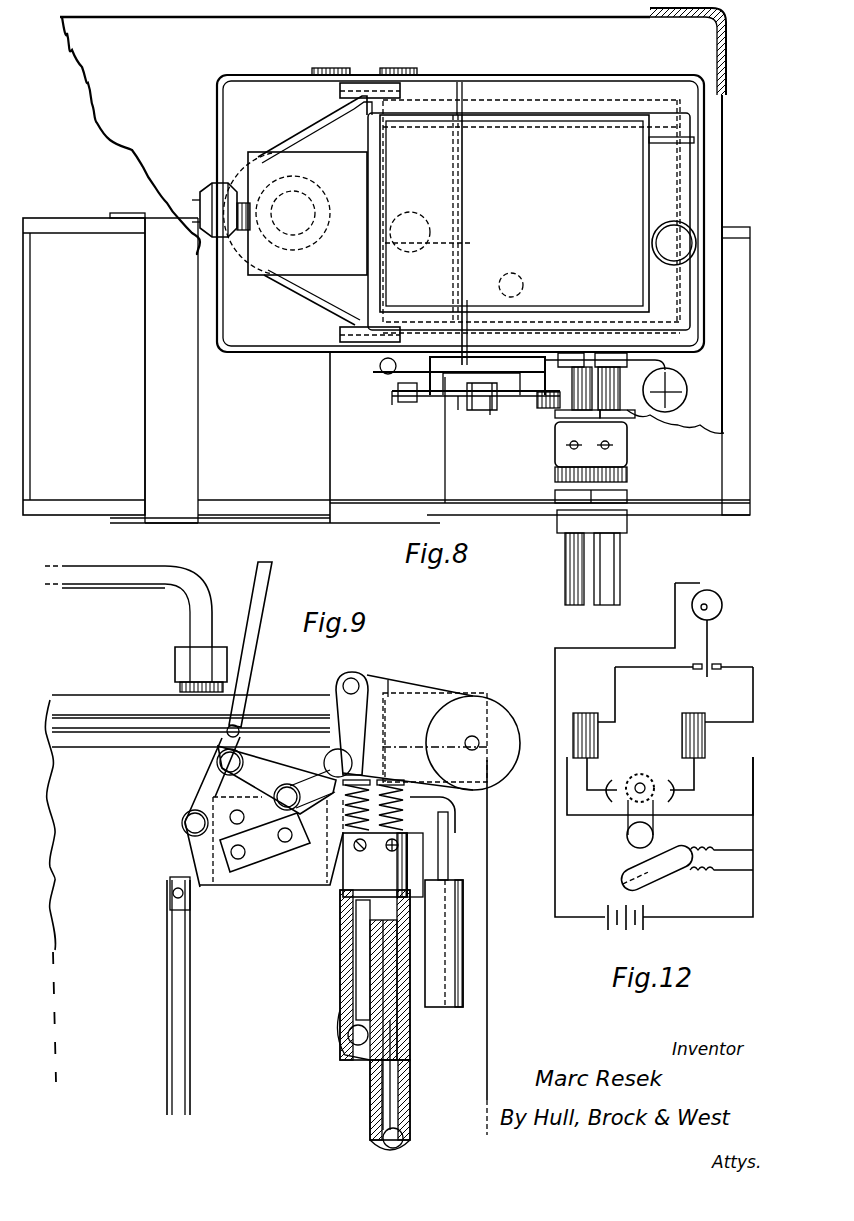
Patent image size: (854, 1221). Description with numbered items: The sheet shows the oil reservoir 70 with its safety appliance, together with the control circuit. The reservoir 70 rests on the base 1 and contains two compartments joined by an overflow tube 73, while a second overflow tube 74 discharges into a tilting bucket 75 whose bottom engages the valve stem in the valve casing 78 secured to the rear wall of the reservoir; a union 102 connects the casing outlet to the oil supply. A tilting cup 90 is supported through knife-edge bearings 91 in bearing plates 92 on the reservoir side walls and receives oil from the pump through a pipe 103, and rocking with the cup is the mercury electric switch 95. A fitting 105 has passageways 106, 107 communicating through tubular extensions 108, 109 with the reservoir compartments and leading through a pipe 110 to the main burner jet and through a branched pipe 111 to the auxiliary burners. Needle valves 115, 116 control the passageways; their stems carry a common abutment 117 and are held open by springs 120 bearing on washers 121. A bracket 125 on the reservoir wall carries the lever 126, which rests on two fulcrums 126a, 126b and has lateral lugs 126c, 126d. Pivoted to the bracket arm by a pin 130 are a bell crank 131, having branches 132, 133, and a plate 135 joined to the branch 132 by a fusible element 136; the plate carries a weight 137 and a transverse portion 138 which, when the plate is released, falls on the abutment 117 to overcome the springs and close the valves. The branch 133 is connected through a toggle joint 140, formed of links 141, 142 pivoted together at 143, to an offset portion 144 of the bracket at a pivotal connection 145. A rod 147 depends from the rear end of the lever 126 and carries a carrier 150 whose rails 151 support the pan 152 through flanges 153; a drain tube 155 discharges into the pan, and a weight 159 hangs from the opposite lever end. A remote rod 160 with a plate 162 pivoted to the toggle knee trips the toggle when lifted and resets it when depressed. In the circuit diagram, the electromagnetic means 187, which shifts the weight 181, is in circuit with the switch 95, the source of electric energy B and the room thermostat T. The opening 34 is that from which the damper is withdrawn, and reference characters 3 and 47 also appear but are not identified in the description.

In FIG. 8, the base 1 is at (112, 118).
In FIG. 8, the frame member 3 is at (688, 18).
In FIG. 8, the opening 34 is at (295, 213).
In FIG. 9, the rod 47 is at (190, 1003).
In FIG. 8, the oil reservoir 70 is at (467, 75).
In FIG. 9, the oil reservoir 70 is at (266, 915).
In FIG. 8, the overflow tube 73 is at (652, 232).
In FIG. 8, the overflow tube 74 is at (471, 243).
In FIG. 8, the tilting bucket 75 is at (312, 140).
In FIG. 8, the valve casing 78 is at (315, 182).
In FIG. 8, the tilting cup 90 is at (531, 216).
In FIG. 8, the knife-edge bearings 91 is at (363, 203).
In FIG. 8, the bearing plates 92 is at (338, 90).
In FIG. 12, the mercury electric switch 95 is at (677, 884).
In FIG. 8, the union 102 is at (198, 195).
In FIG. 8, the pipe 103 is at (455, 200).
In FIG. 9, the pipe 103 is at (52, 593).
In FIG. 8, the fitting 105 is at (630, 453).
In FIG. 9, the fitting 105 is at (411, 1051).
In FIG. 9, the passageway 106 is at (381, 1138).
In FIG. 9, the passageway 107 is at (347, 1036).
In FIG. 8, the tubular extension 108 is at (632, 415).
In FIG. 9, the tubular extension 108 is at (406, 1106).
In FIG. 8, the tubular extension 109 is at (560, 420).
In FIG. 9, the tubular extension 109 is at (350, 1009).
In FIG. 8, the pipe 110 is at (618, 565).
In FIG. 8, the branched pipe 111 is at (568, 572).
In FIG. 9, the needle valve 115 is at (396, 1003).
In FIG. 9, the needle valve 116 is at (352, 955).
In FIG. 8, the common abutment 117 is at (558, 455).
In FIG. 9, the common abutment 117 is at (320, 760).
In FIG. 9, the springs 120 is at (383, 865).
In FIG. 9, the washers 121 is at (378, 779).
In FIG. 8, the bracket 125 is at (477, 240).
In FIG. 9, the bracket 125 is at (278, 887).
In FIG. 8, the lever 126 is at (505, 360).
In FIG. 9, the lever 126 is at (172, 877).
In FIG. 9, the fulcrum 126a is at (218, 887).
In FIG. 9, the fulcrum 126b is at (308, 887).
In FIG. 9, the lug 126c is at (265, 842).
In FIG. 9, the lug 126d is at (237, 880).
In FIG. 9, the pin 130 is at (338, 755).
In FIG. 9, the bell crank 131 is at (316, 751).
In FIG. 9, the branch 132 is at (349, 723).
In FIG. 9, the branch 133 is at (312, 789).
In FIG. 9, the plate 135 is at (372, 678).
In FIG. 9, the fusible element 136 is at (353, 677).
In FIG. 9, the weight 137 is at (475, 705).
In FIG. 9, the transverse portion 138 is at (398, 682).
In FIG. 9, the toggle joint 140 is at (262, 809).
In FIG. 8, the link 141 is at (430, 398).
In FIG. 9, the link 141 is at (210, 782).
In FIG. 8, the link 142 is at (493, 410).
In FIG. 9, the link 142 is at (277, 780).
In FIG. 8, the pivot 143 is at (490, 416).
In FIG. 9, the pivot 143 is at (218, 762).
In FIG. 8, the offset portion 144 is at (393, 397).
In FIG. 9, the offset portion 144 is at (185, 838).
In FIG. 8, the pivotal connection 145 is at (402, 404).
In FIG. 9, the pivotal connection 145 is at (182, 825).
In FIG. 8, the rod 147 is at (385, 375).
In FIG. 8, the carrier 150 is at (333, 462).
In FIG. 8, the supporting rails 151 is at (125, 213).
In FIG. 8, the pan 152 is at (84, 366).
In FIG. 8, the flanges 153 is at (103, 234).
In FIG. 8, the drain tube 155 is at (515, 273).
In FIG. 8, the weight 159 is at (682, 384).
In FIG. 9, the weight 159 is at (461, 878).
In FIG. 9, the rod 160 is at (258, 641).
In FIG. 8, the plate 162 is at (459, 410).
In FIG. 9, the plate 162 is at (228, 724).
In FIG. 12, the shiftable weight 181 is at (640, 848).
In FIG. 12, the electromagnetic means 187 is at (660, 815).
In FIG. 12, the room thermostat T is at (728, 610).
In FIG. 12, the source of electric energy B is at (613, 912).